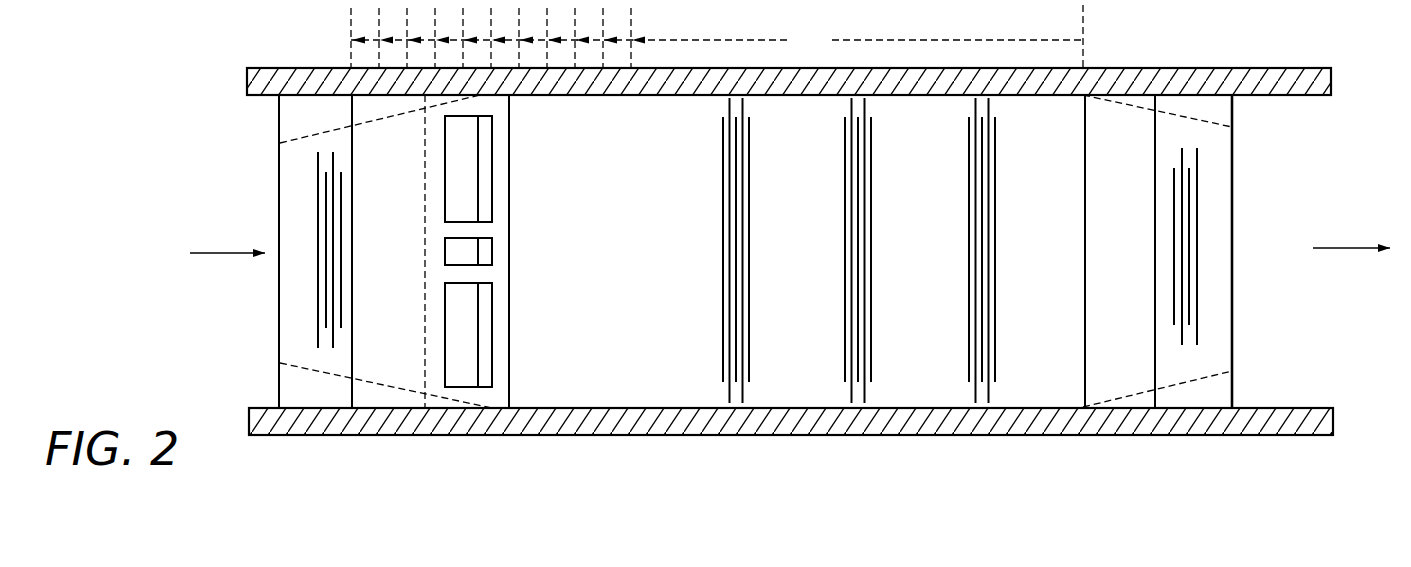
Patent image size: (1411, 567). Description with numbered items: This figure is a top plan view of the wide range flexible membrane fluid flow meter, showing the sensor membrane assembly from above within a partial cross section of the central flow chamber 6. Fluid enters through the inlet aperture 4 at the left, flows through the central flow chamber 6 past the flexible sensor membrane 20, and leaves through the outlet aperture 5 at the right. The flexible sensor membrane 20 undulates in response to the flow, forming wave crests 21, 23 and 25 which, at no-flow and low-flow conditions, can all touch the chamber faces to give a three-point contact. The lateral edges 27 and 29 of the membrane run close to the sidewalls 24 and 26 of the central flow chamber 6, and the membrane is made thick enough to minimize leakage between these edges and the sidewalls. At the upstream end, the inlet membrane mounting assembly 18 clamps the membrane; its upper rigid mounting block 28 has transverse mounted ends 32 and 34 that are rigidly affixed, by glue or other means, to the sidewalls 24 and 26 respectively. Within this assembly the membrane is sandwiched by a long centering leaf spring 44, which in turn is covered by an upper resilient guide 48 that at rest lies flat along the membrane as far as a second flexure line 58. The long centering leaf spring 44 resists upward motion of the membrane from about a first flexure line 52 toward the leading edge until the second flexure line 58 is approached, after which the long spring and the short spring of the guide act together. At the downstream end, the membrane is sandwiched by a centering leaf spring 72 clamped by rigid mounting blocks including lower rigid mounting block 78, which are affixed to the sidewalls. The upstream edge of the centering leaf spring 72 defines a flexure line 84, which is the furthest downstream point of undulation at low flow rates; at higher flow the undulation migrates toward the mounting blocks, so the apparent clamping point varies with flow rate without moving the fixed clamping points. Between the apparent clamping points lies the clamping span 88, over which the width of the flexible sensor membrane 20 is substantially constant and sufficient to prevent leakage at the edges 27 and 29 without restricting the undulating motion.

The inlet aperture 4 is at (237, 253).
The outlet aperture 5 is at (1347, 248).
The central flow chamber 6 is at (1013, 68).
The inlet membrane mounting assembly 18 is at (279, 340).
The flexible sensor membrane 20 is at (626, 275).
The wave crest 21 is at (749, 255).
The wave crest 23 is at (871, 270).
The sidewall 24 is at (700, 68).
The wave crest 25 is at (995, 205).
The sidewall 26 is at (700, 436).
The edge 27 is at (1032, 95).
The upper rigid mounting block 28 is at (353, 205).
The edge 29 is at (1020, 407).
The transverse mounted end 32 is at (340, 97).
The transverse mounted end 34 is at (340, 408).
The long centering leaf spring 44 is at (467, 150).
The upper resilient guide 48 is at (510, 265).
The first flexure line 52 is at (478, 330).
The second flexure line 58 is at (425, 321).
The centering leaf spring 72 is at (1115, 307).
The lower rigid mounting block 78 is at (1232, 260).
The flexure line 84 is at (1085, 225).
The clamping span 88 is at (717, 38).